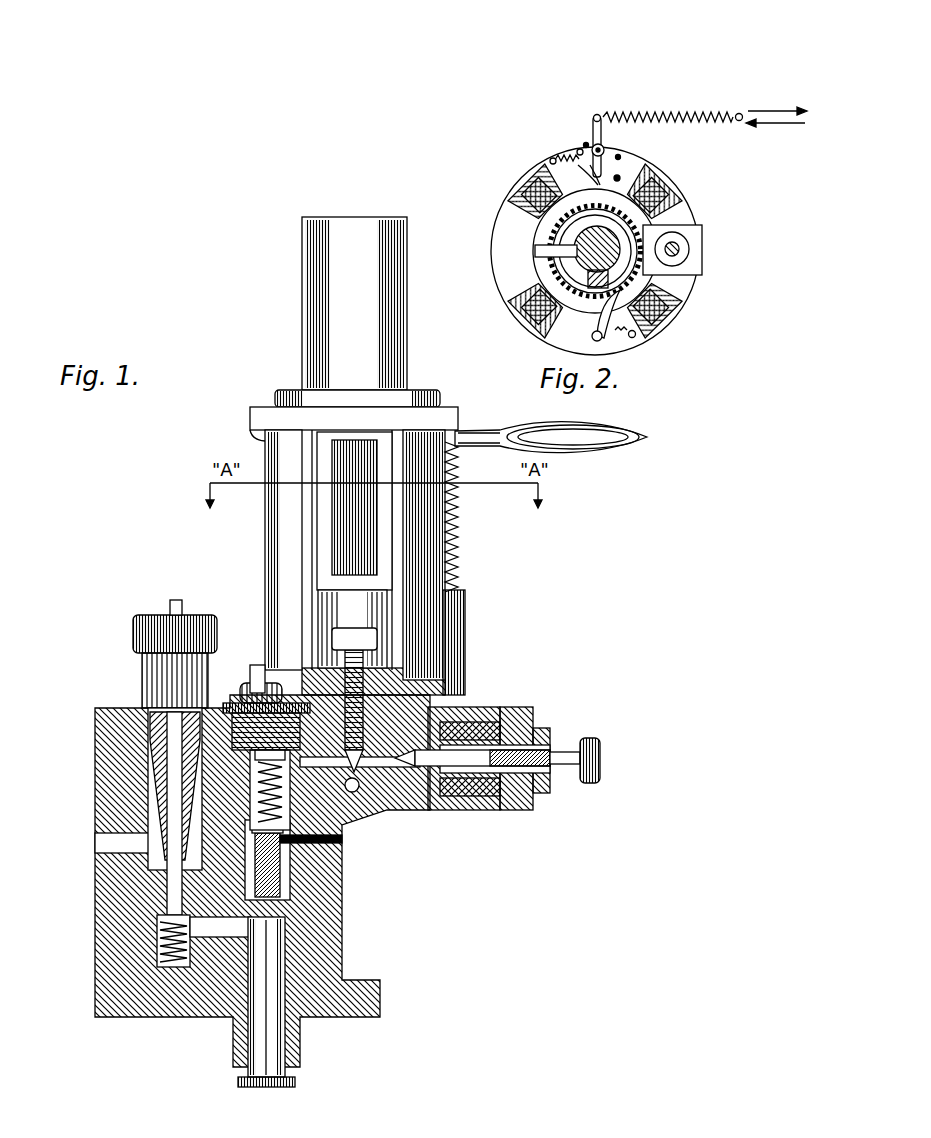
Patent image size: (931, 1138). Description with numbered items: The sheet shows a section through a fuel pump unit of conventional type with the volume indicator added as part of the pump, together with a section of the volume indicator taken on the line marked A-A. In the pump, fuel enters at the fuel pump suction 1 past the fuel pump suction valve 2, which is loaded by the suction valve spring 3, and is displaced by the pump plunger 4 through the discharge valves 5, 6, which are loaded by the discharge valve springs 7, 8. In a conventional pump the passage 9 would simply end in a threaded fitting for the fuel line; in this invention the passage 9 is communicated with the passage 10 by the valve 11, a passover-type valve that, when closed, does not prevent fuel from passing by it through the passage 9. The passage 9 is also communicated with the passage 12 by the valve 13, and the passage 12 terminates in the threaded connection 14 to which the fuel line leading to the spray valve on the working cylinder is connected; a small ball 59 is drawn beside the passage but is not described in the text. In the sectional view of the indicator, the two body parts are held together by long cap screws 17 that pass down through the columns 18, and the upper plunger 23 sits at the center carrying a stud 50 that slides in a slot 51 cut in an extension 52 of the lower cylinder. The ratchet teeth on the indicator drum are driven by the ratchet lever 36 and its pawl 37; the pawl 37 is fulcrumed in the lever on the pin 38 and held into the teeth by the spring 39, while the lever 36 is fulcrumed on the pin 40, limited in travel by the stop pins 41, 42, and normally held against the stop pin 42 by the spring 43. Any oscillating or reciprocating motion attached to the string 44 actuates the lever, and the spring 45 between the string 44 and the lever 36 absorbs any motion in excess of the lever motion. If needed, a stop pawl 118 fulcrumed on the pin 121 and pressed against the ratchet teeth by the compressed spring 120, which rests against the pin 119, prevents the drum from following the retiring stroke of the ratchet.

In FIG. 1, the fuel pump suction 1 is at (110, 843).
In FIG. 1, the fuel pump suction valve 2 is at (173, 877).
In FIG. 1, the suction valve spring 3 is at (160, 935).
In FIG. 1, the pump plunger 4 is at (265, 980).
In FIG. 1, the discharge valve 5 is at (285, 860).
In FIG. 1, the discharge valve 6 is at (330, 838).
In FIG. 1, the discharge valve spring 7 is at (285, 882).
In FIG. 1, the discharge valve spring 8 is at (347, 817).
In FIG. 1, the passage 9 is at (267, 687).
In FIG. 1, the passage 10 is at (388, 812).
In FIG. 1, the valve 11 is at (313, 700).
In FIG. 1, the passage 12 is at (420, 718).
In FIG. 1, the valve 13 is at (478, 760).
In FIG. 1, the threaded connection 14 is at (460, 690).
In FIG. 1, the ball 59 is at (422, 812).
In FIG. 2, the cap screws 17 is at (665, 185).
In FIG. 2, the columns 18 is at (687, 202).
In FIG. 2, the upper plunger 23 is at (585, 258).
In FIG. 2, the ratchet lever 36 is at (597, 117).
In FIG. 2, the pawl 37 is at (617, 178).
In FIG. 2, the pin 38 is at (565, 150).
In FIG. 2, the spring 39 is at (580, 177).
In FIG. 2, the pin 40 is at (598, 150).
In FIG. 2, the stop pin 41 is at (618, 157).
In FIG. 2, the stop pin 42 is at (587, 145).
In FIG. 2, the spring 43 is at (580, 150).
In FIG. 2, the string 44 is at (748, 112).
In FIG. 2, the spring 45 is at (663, 117).
In FIG. 2, the stud 50 is at (598, 272).
In FIG. 2, the slot 51 is at (658, 282).
In FIG. 2, the extension 52 is at (575, 300).
In FIG. 2, the stop pawl 118 is at (640, 315).
In FIG. 2, the pin 119 is at (637, 338).
In FIG. 2, the spring 120 is at (682, 318).
In FIG. 2, the pin 121 is at (603, 342).